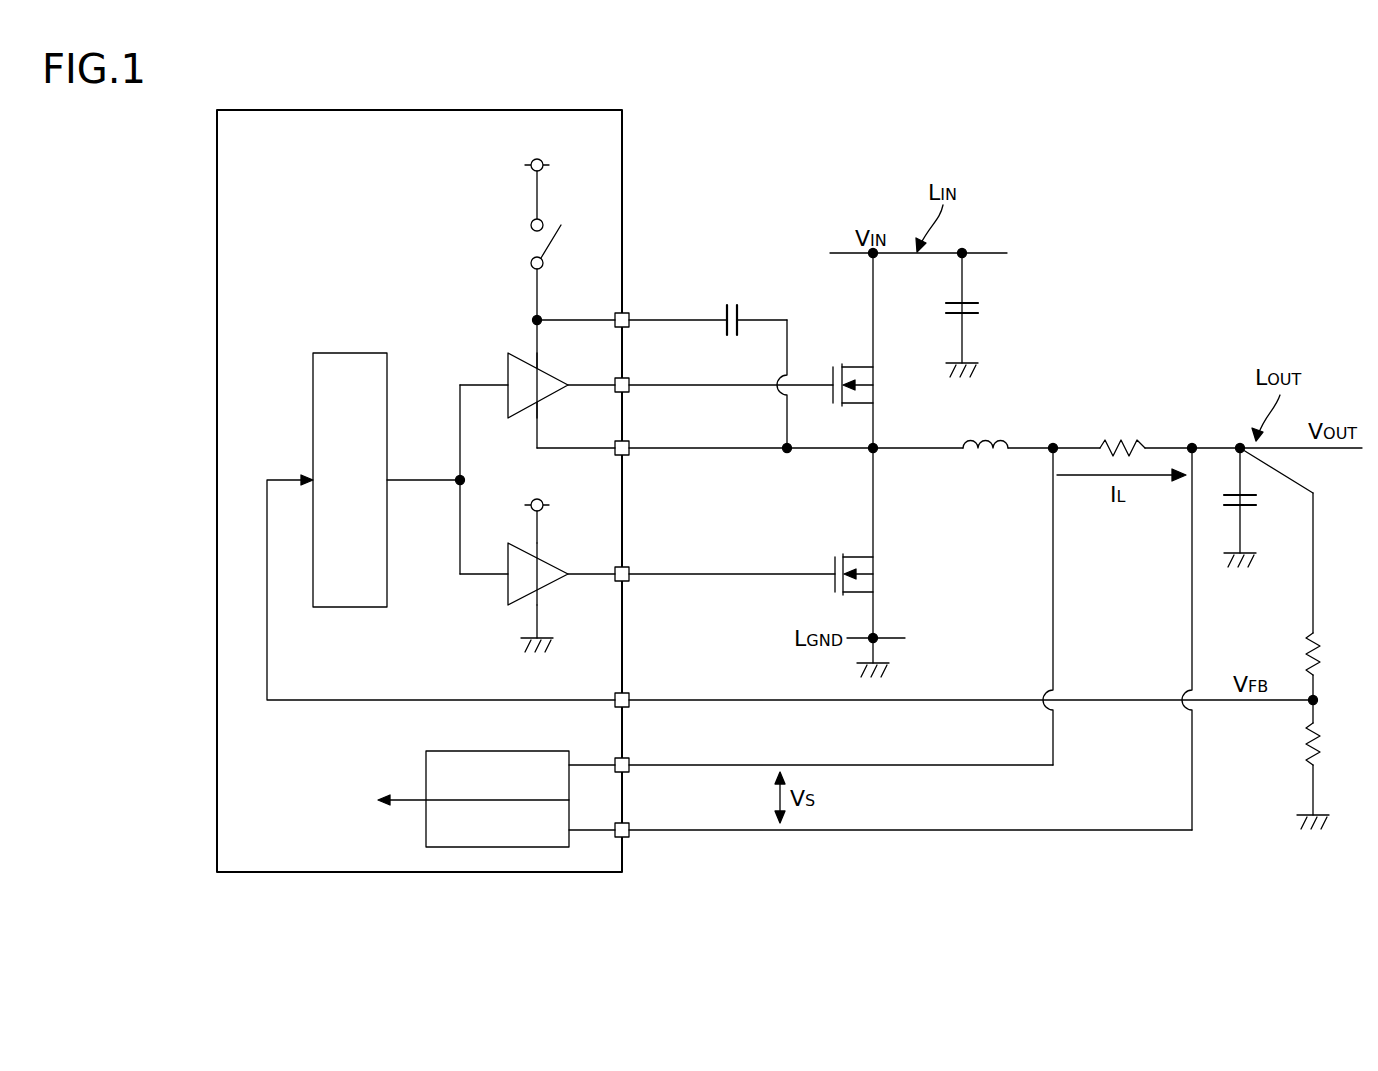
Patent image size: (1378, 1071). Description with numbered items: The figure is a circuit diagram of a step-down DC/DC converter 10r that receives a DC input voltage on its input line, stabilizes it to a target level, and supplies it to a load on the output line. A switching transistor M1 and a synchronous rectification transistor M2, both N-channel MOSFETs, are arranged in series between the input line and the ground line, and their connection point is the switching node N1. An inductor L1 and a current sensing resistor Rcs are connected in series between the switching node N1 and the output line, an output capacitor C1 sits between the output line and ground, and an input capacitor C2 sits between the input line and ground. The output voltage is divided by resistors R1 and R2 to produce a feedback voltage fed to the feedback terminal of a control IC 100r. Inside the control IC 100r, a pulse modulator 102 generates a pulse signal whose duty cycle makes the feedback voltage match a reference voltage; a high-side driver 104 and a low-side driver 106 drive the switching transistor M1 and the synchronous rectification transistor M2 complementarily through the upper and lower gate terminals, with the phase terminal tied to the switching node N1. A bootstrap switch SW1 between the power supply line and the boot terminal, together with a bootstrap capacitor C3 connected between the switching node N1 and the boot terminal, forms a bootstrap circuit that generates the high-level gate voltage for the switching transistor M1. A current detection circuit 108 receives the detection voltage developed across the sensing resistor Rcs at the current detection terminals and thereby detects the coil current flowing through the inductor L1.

The control IC 100r is at (420, 110).
The pulse modulator 102 is at (349, 353).
The high-side driver 104 is at (556, 372).
The low-side driver 106 is at (556, 562).
The current detection circuit 108 is at (497, 751).
The DC/DC converter 10r is at (810, 924).
The switching transistor M1 is at (873, 350).
The synchronous rectification transistor M2 is at (771, 555).
The inductor L1 is at (985, 430).
The output capacitor C1 is at (1255, 507).
The input capacitor C2 is at (977, 315).
The bootstrap capacitor C3 is at (708, 306).
The current sensing resistor Rcs is at (1122, 435).
The resistor R1 is at (1330, 654).
The resistor R2 is at (1330, 744).
The bootstrap switch SW1 is at (572, 247).
The switching node N1 is at (885, 441).